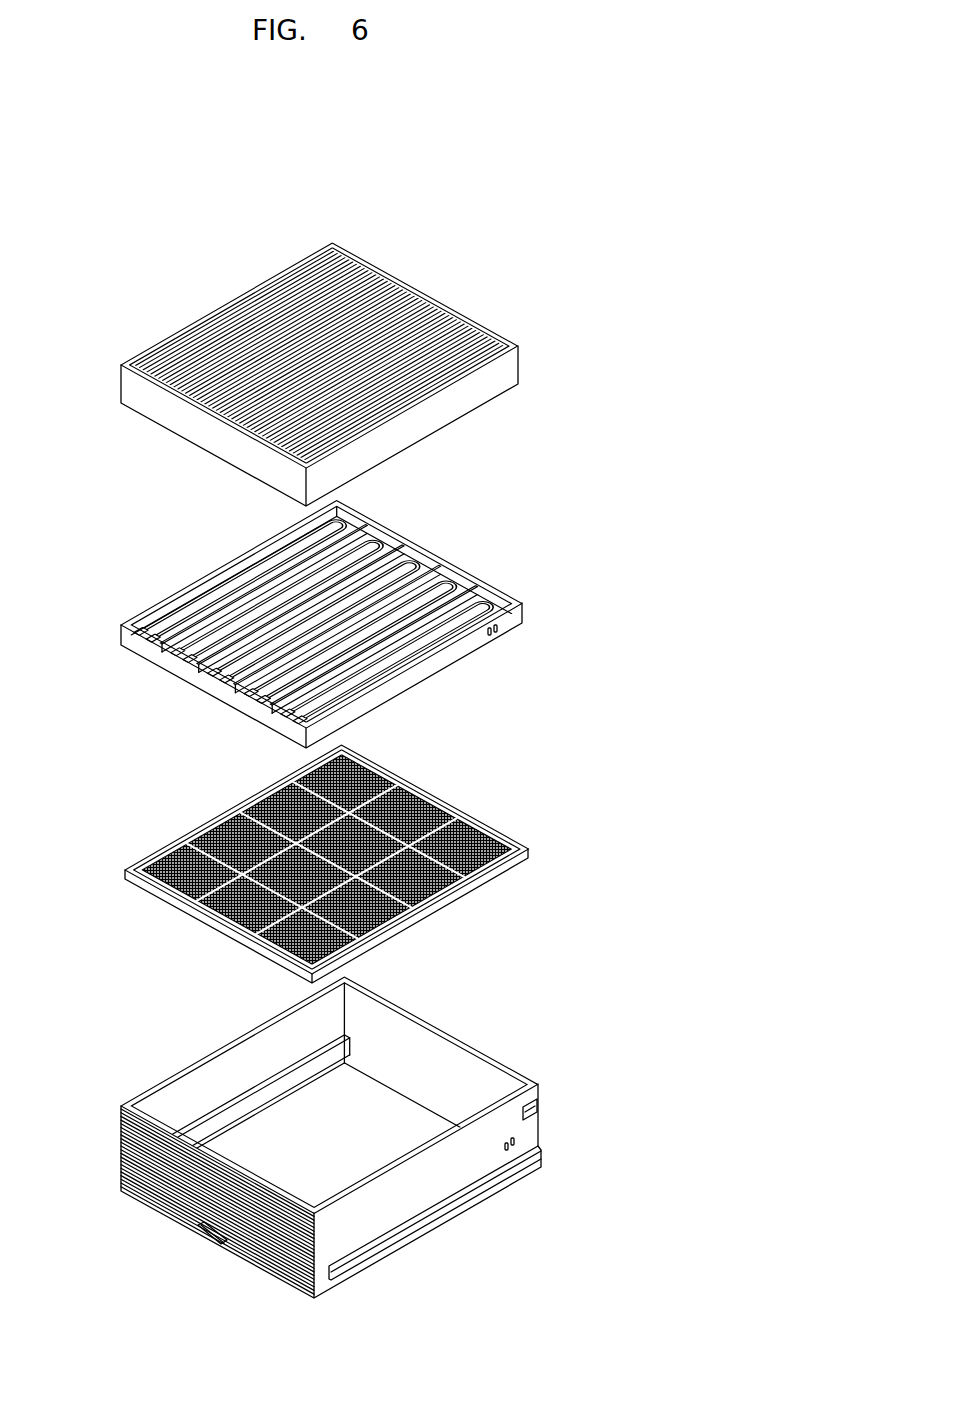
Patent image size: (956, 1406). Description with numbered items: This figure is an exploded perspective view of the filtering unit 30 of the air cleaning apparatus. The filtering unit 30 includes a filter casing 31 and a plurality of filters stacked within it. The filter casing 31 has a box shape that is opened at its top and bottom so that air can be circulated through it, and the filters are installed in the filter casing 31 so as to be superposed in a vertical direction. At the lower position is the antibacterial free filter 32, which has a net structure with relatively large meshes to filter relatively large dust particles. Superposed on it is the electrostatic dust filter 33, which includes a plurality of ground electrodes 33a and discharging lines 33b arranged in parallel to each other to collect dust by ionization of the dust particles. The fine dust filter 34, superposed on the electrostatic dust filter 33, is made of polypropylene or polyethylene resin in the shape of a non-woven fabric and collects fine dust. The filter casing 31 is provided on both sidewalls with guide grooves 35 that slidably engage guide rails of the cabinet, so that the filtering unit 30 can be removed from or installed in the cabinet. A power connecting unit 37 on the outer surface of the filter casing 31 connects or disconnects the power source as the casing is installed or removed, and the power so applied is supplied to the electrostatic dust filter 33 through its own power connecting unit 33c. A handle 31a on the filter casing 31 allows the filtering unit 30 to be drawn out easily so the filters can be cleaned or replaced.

The filtering unit 30 is at (582, 729).
The filter casing 31 is at (113, 1098).
The handle 31a is at (195, 1222).
The antibacterial free filter 32 is at (117, 861).
The electrostatic dust filter 33 is at (113, 616).
The ground electrodes 33a is at (392, 541).
The discharging lines 33b is at (462, 569).
The power connecting unit of the electrostatic dust filter 33c is at (500, 621).
The fine dust filter 34 is at (112, 357).
The guide grooves 35 is at (457, 1187).
The power connecting unit 37 is at (530, 1101).